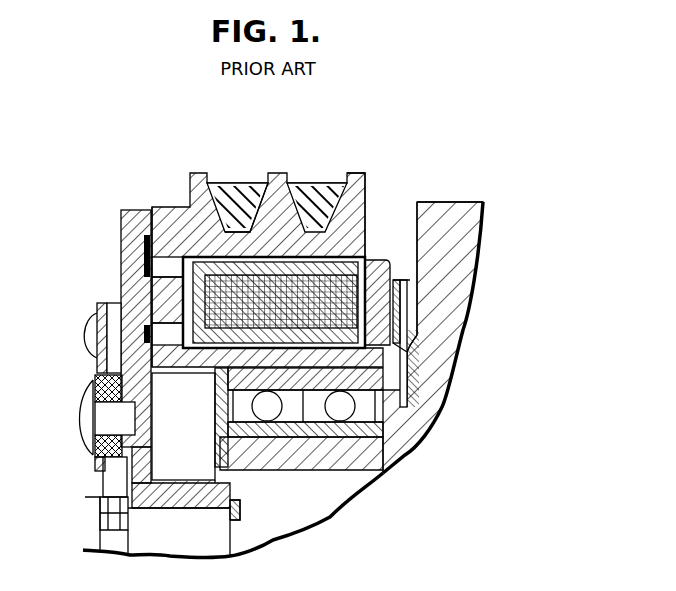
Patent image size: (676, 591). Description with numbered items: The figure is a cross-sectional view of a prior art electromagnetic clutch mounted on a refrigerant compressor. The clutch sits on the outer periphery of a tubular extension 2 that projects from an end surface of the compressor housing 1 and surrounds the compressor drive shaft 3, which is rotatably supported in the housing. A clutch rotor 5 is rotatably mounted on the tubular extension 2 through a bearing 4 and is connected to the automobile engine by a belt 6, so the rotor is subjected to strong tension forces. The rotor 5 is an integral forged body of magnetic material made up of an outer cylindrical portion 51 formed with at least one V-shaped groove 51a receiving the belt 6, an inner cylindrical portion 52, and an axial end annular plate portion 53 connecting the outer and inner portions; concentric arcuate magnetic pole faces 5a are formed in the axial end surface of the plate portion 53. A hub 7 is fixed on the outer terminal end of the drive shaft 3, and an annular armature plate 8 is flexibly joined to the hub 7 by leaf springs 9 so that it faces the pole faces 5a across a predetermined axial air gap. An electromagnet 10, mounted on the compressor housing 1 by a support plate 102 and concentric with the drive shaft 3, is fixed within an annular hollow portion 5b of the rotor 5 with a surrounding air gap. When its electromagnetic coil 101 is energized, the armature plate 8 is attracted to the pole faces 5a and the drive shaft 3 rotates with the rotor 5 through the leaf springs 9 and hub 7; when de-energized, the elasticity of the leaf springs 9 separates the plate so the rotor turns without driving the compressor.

The compressor housing 1 is at (468, 228).
The tubular extension 2 is at (345, 470).
The drive shaft 3 is at (277, 522).
The bearing 4 is at (376, 428).
The rotor 5 is at (297, 210).
The magnetic pole faces 5a is at (152, 285).
The annular hollow portion 5b is at (357, 257).
The belt 6 is at (238, 190).
The hub 7 is at (93, 480).
The armature plate 8 is at (121, 227).
The leaf springs 9 is at (100, 395).
The electromagnet 10 is at (398, 267).
The outer cylindrical portion 51 is at (350, 190).
The V-shaped groove 51a is at (253, 188).
The inner cylindrical portion 52 is at (205, 373).
The axial end annular plate portion 53 is at (160, 298).
The electromagnetic coil 101 is at (362, 287).
The support plate 102 is at (413, 365).